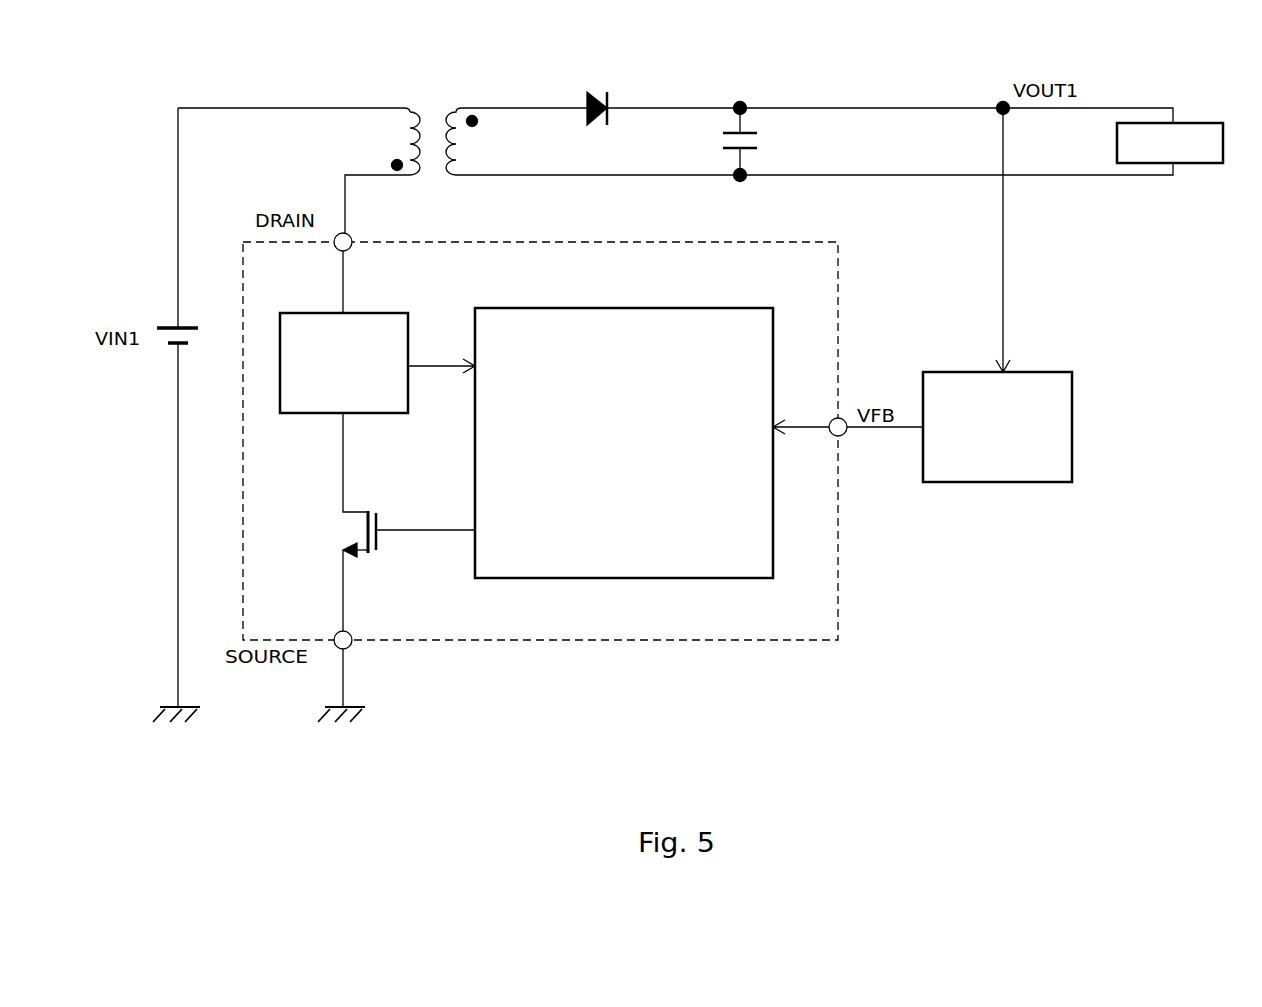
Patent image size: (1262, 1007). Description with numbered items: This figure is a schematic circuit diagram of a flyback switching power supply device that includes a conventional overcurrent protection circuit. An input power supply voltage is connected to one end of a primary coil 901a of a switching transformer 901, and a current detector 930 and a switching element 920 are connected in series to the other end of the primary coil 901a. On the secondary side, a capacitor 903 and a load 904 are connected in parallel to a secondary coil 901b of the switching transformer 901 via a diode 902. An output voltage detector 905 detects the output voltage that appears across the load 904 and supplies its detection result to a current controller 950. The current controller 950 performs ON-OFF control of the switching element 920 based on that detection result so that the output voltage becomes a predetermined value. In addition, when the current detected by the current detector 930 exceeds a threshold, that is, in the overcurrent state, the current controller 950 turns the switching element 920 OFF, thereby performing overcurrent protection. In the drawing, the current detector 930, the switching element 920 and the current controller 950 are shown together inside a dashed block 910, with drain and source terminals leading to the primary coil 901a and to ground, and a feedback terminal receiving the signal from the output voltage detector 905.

The switching transformer 901 is at (432, 141).
The primary coil 901a is at (376, 152).
The secondary coil 901b is at (494, 135).
The diode 902 is at (600, 92).
The capacitor 903 is at (757, 140).
The load 904 is at (1205, 123).
The output voltage detector 905 is at (1055, 372).
The semiconductor device / switching power supply control IC 910 is at (640, 640).
The switching element 920 is at (372, 512).
The current detector 930 is at (378, 313).
The current controller 950 is at (630, 308).